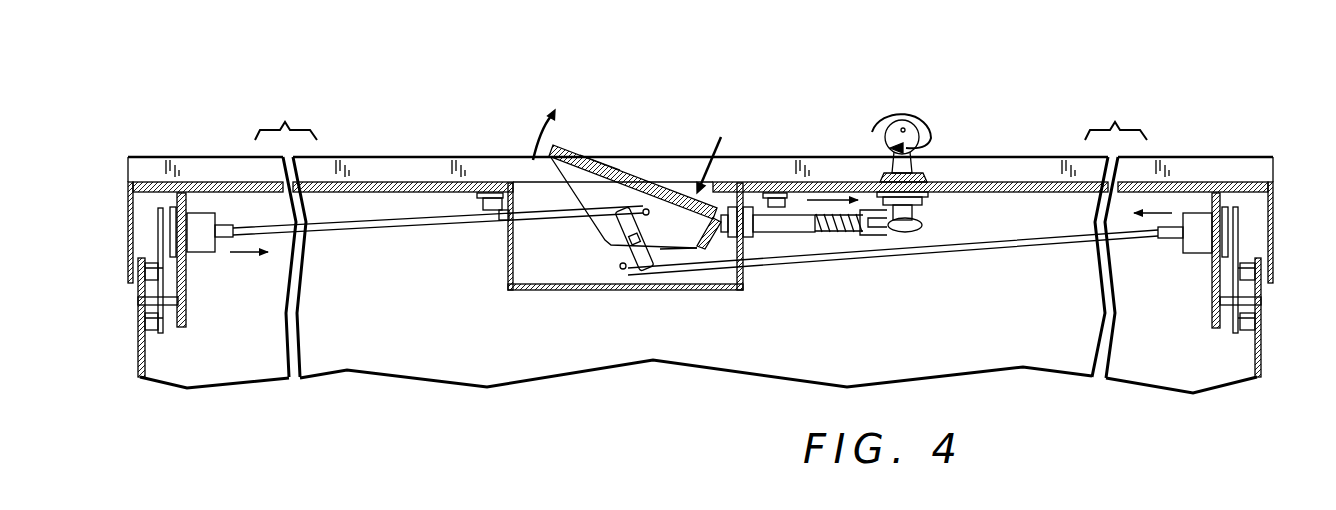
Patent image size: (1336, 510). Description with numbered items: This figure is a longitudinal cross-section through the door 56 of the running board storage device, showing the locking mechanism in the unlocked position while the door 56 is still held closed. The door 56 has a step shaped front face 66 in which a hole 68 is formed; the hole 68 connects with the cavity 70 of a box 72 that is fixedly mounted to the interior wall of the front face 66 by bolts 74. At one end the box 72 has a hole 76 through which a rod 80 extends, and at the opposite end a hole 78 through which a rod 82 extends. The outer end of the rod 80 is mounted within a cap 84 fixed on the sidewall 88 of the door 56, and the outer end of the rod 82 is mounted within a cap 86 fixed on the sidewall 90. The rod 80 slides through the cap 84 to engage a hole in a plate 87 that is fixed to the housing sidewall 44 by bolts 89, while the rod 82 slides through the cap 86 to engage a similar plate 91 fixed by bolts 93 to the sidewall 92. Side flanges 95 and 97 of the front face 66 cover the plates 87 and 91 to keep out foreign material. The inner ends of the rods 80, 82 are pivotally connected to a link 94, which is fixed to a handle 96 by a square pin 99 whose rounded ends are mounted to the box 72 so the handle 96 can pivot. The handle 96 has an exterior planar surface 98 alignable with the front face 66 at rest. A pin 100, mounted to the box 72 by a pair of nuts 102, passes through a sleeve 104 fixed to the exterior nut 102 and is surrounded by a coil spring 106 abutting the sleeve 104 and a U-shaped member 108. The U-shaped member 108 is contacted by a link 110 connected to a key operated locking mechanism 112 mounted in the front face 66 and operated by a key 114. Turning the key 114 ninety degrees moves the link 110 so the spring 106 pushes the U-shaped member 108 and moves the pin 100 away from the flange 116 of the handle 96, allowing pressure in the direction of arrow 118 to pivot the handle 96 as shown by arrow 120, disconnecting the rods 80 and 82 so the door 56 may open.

The sidewall 44 is at (140, 322).
The door 56 is at (356, 157).
The front face 66 is at (429, 182).
The hole 68 is at (528, 184).
The cavity 70 is at (548, 290).
The box 72 is at (697, 292).
The bolts 74 is at (488, 193).
The hole 76 is at (502, 215).
The hole 78 is at (747, 270).
The rod 80 is at (405, 222).
The rod 82 is at (1045, 237).
The cap 84 is at (210, 215).
The cap 86 is at (1189, 215).
The plate 87 is at (166, 198).
The sidewall 88 is at (186, 322).
The bolts 89 is at (155, 283).
The sidewall 90 is at (1207, 322).
The plate 91 is at (1235, 197).
The sidewall 92 is at (1257, 320).
The bolts 93 is at (1250, 282).
The link 94 is at (607, 262).
The side flange 95 is at (128, 212).
The handle 96 is at (627, 157).
The side flange 97 is at (1273, 220).
The exterior planar surface 98 is at (607, 158).
The square pin 99 is at (645, 262).
The pin 100 is at (717, 250).
The nuts 102 is at (748, 206).
The sleeve 104 is at (801, 233).
The coil spring 106 is at (832, 212).
The U-shaped member 108 is at (868, 236).
The link 110 is at (905, 233).
The key operated locking mechanism 112 is at (930, 202).
The key 114 is at (889, 122).
The flange 116 is at (681, 247).
The arrow 118 is at (709, 137).
The arrow 120 is at (550, 137).